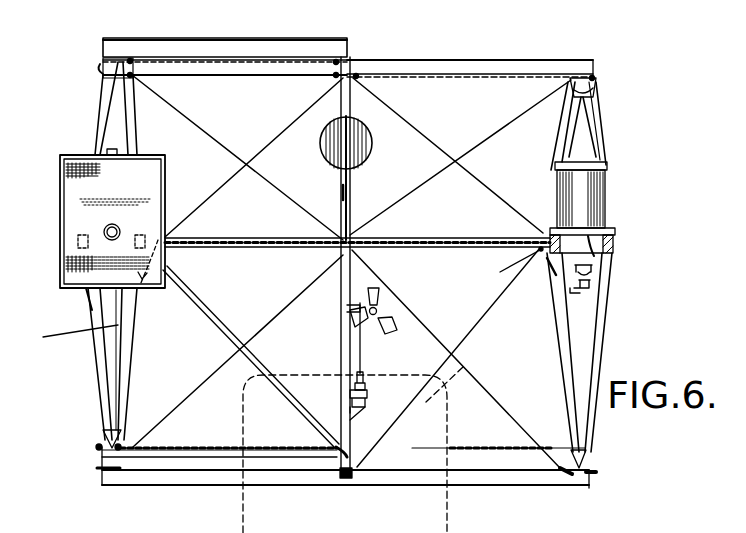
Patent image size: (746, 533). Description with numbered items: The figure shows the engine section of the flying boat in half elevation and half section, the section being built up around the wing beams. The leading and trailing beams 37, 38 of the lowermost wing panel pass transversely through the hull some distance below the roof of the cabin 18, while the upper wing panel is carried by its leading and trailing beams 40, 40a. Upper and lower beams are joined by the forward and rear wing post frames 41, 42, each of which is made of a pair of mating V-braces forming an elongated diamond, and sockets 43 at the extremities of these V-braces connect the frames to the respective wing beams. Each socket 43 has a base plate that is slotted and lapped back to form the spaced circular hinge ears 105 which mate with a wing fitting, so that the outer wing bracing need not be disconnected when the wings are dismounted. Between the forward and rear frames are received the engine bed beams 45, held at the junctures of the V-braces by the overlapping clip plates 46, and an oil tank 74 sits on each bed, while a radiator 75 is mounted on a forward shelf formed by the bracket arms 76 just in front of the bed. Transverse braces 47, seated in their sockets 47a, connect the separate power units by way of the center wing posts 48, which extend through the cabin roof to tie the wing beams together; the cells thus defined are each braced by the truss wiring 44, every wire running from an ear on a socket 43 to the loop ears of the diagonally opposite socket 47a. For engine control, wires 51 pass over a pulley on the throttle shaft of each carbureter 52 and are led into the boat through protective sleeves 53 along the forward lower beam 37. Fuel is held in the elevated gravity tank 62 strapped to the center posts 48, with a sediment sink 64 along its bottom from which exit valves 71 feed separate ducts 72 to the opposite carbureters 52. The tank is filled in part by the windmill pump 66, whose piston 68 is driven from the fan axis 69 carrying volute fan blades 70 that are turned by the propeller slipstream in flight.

The cabin 18 is at (466, 366).
The leading wing beam 37 is at (302, 463).
The trailing wing beam 38 is at (528, 484).
The leading wing beam of upper panel 40 is at (285, 40).
The trailing wing beam of upper panel 40a is at (503, 61).
The forward wing post frame 41 is at (95, 343).
The rear wing post frame 42 is at (594, 118).
The socket 43 is at (103, 67).
The cellular cross bracing 44 is at (200, 125).
The engine bed beam 45 is at (613, 242).
The clip plate 46 is at (614, 248).
The transverse brace 47 is at (248, 238).
The seating socket 47a is at (503, 266).
The center wing post 48 is at (351, 200).
The control wire 51 is at (618, 325).
The carbureter 52 is at (586, 278).
The protective sleeve 53 is at (197, 447).
The gravity tank 62 is at (370, 150).
The sediment trap or sink 64 is at (353, 177).
The windmill pump 66 is at (368, 392).
The piston 68 is at (364, 380).
The fan axis 69 is at (380, 305).
The volute fan blades 70 is at (390, 322).
The exit valve 71 is at (341, 192).
The duct 72 is at (155, 292).
The oil tank 74 is at (593, 195).
The radiator 75 is at (163, 186).
The bracket arm 76 is at (92, 304).
The hinge ear 105 is at (97, 447).